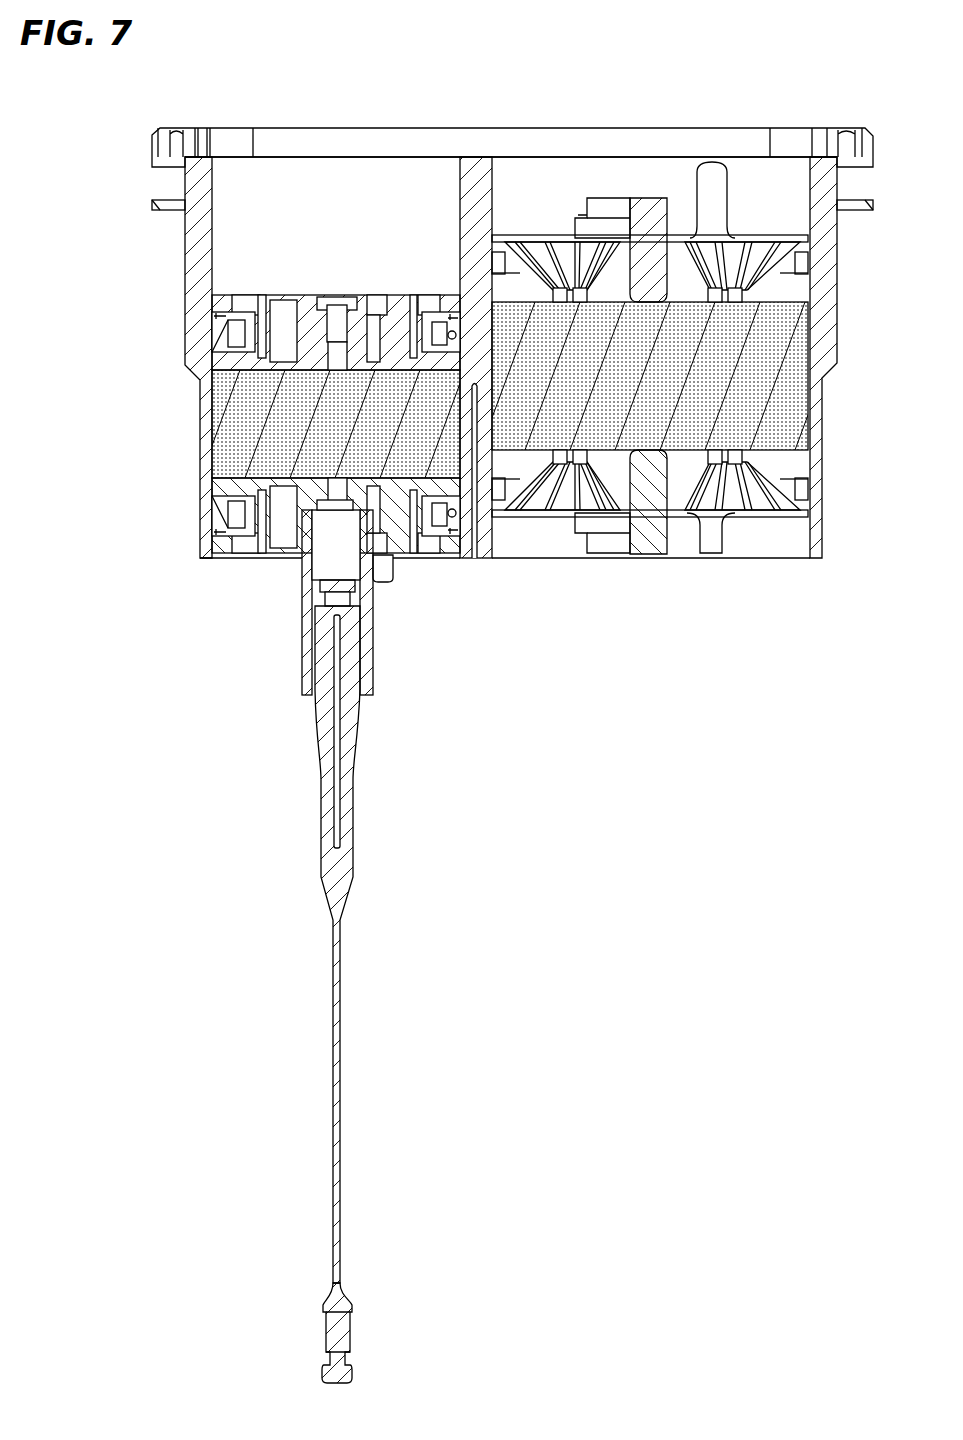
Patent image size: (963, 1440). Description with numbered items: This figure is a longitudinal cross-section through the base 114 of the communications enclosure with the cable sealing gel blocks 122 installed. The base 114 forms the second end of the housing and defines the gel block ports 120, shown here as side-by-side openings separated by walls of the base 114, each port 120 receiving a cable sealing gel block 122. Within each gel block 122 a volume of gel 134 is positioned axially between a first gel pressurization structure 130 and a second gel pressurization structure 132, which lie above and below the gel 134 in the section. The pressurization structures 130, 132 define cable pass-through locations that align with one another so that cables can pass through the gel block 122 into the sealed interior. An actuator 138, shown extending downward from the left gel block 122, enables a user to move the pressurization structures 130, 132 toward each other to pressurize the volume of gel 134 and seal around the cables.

The base 114 is at (185, 239).
The gel block port 120 is at (212, 205).
The cable sealing gel block 122 is at (238, 558).
The first gel pressurization structure 130 is at (225, 508).
The second gel pressurization structure 132 is at (402, 293).
The volume of gel 134 is at (243, 425).
The actuator 138 is at (318, 757).